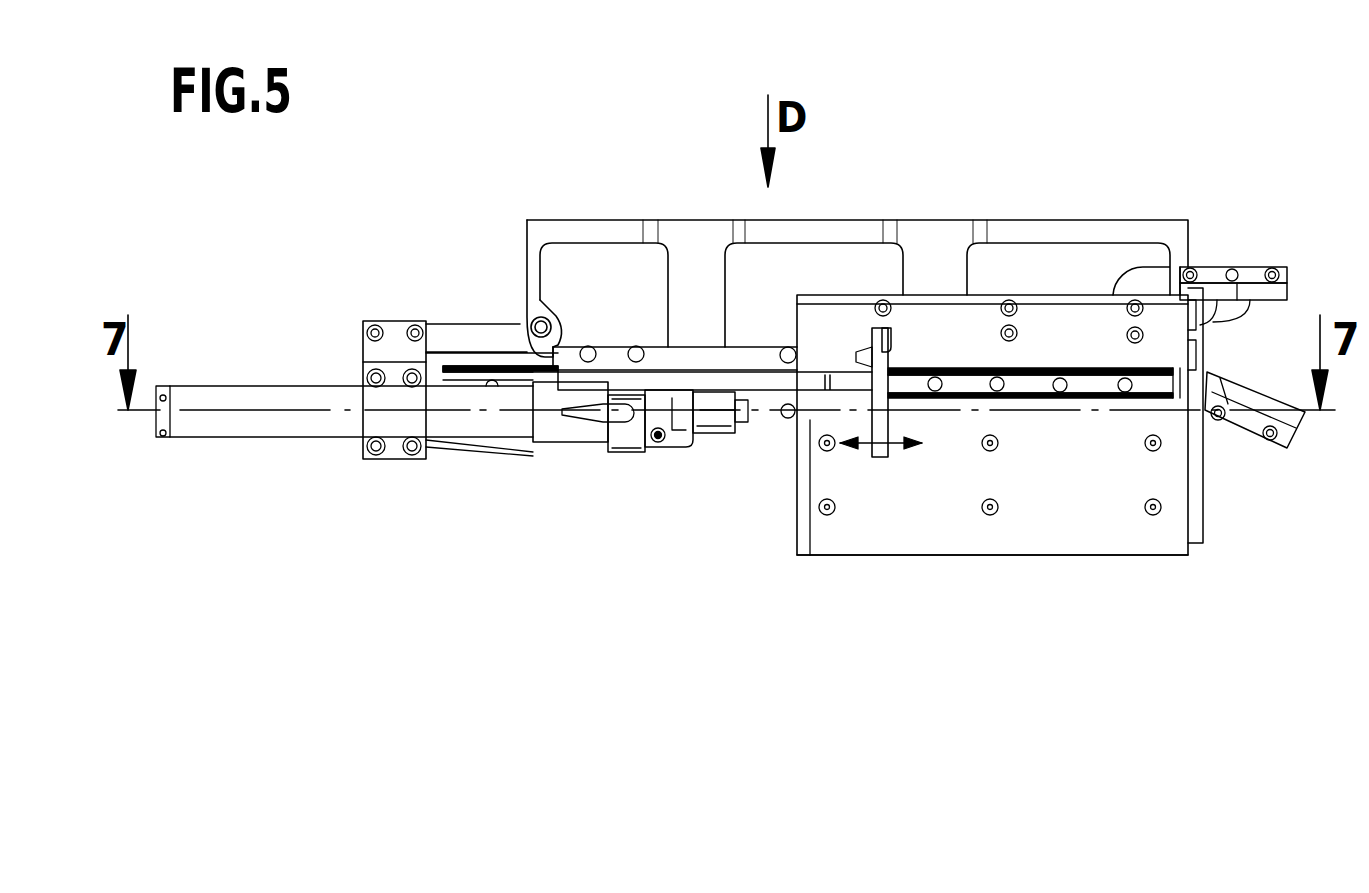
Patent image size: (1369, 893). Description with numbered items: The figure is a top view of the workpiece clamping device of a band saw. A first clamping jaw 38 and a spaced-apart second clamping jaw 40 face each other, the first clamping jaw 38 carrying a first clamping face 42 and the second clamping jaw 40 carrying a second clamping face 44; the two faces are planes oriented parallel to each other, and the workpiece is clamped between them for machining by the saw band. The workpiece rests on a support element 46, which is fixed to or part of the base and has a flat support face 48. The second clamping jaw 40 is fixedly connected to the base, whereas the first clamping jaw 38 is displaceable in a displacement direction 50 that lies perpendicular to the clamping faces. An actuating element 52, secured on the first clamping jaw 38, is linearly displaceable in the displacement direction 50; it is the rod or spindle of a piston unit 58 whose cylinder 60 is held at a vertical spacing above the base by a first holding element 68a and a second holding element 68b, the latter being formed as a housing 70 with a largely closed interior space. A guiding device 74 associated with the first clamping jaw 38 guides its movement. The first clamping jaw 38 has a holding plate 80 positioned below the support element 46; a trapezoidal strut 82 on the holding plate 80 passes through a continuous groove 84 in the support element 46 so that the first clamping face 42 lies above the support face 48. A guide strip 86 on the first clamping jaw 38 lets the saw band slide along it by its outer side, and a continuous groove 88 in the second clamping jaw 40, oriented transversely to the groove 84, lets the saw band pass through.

The first clamping jaw 38 is at (872, 348).
The second clamping jaw 40 is at (1195, 468).
The first clamping face 42 is at (890, 425).
The second clamping face 44 is at (1186, 498).
The support element 46 is at (1078, 540).
The support face 48 is at (995, 540).
The displacement direction 50 is at (675, 448).
The actuating element 52 is at (687, 404).
The piston unit 58 is at (255, 425).
The cylinder 60 is at (288, 397).
The first holding element 68a is at (393, 452).
The second holding element 68b is at (633, 452).
The housing 70 is at (468, 372).
The guiding device 74 is at (518, 402).
The holding plate 80 is at (700, 360).
The strut 82 is at (800, 390).
The groove 84 is at (1030, 385).
The guide strip 86 is at (888, 338).
The groove 88 is at (1245, 310).